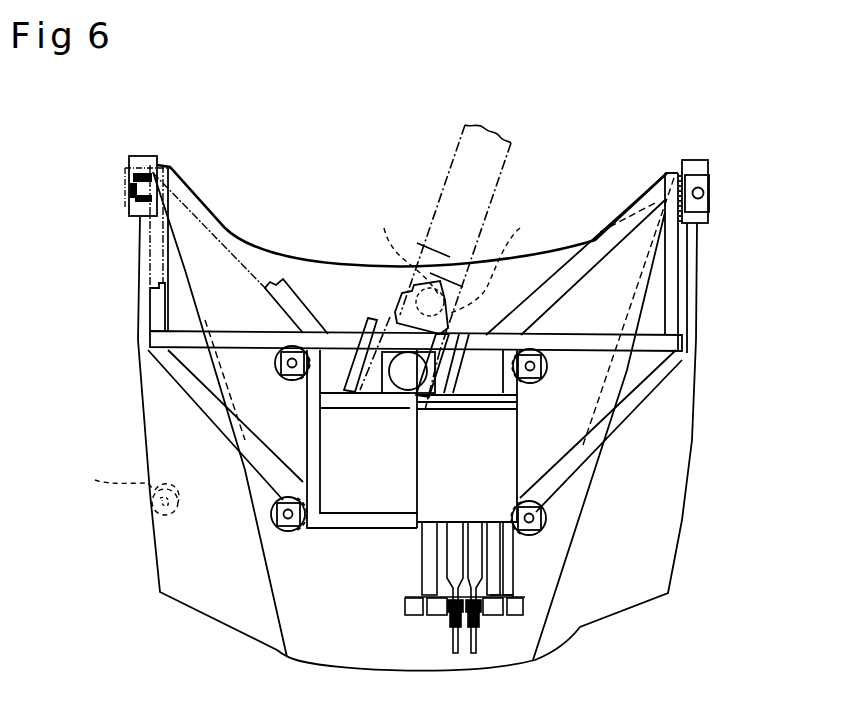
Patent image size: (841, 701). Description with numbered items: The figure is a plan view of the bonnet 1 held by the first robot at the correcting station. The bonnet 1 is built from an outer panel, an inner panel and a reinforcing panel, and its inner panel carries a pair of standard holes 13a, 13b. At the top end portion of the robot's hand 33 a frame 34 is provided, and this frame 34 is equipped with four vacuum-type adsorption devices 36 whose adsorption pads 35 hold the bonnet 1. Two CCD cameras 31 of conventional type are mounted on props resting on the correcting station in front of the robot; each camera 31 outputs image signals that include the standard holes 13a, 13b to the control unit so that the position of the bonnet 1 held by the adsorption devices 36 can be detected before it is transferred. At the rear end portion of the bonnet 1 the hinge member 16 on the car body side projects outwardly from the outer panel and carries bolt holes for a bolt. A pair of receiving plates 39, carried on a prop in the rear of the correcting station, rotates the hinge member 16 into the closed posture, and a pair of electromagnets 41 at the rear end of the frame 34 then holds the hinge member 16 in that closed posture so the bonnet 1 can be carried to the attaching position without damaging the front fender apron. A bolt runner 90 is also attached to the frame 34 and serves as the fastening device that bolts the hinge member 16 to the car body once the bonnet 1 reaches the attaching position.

The bonnet 1 is at (677, 540).
The standard hole 13a is at (111, 480).
The standard hole 13b is at (513, 256).
The hinge member on the car body side 16 is at (136, 185).
The CCD camera 31 is at (105, 547).
The hand 33 is at (440, 190).
The frame 34 is at (685, 287).
The adsorption pad 35 is at (545, 520).
The adsorption device 36 is at (283, 376).
The receiving plate 39 is at (142, 156).
The electromagnet 41 is at (708, 191).
The bolt runner 90 is at (412, 571).